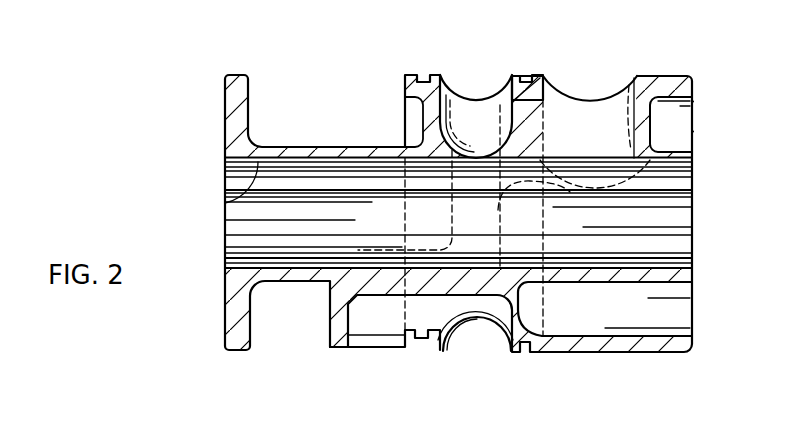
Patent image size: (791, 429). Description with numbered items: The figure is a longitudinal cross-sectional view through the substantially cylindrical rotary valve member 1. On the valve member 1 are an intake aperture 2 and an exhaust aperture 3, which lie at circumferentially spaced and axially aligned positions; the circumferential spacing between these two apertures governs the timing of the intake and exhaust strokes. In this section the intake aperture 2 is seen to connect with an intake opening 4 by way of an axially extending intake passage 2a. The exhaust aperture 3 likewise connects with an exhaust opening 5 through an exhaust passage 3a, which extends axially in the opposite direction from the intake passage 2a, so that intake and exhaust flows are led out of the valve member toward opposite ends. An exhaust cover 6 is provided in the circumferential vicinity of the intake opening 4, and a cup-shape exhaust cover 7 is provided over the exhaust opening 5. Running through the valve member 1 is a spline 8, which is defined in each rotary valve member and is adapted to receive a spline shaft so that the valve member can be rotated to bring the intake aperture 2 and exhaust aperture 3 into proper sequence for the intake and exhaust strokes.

The rotary valve member 1 is at (660, 82).
The intake aperture 2 is at (482, 108).
The intake passage 2a is at (523, 128).
The exhaust aperture 3 is at (478, 322).
The exhaust passage 3a is at (425, 315).
The intake opening 4 is at (600, 108).
The exhaust opening 5 is at (372, 338).
The exhaust cover 6 is at (588, 342).
The cup-shape exhaust cover 7 is at (334, 312).
The spline 8 is at (225, 203).